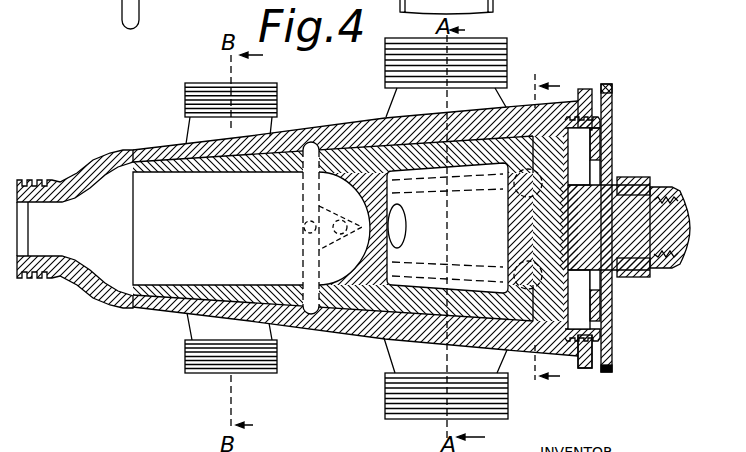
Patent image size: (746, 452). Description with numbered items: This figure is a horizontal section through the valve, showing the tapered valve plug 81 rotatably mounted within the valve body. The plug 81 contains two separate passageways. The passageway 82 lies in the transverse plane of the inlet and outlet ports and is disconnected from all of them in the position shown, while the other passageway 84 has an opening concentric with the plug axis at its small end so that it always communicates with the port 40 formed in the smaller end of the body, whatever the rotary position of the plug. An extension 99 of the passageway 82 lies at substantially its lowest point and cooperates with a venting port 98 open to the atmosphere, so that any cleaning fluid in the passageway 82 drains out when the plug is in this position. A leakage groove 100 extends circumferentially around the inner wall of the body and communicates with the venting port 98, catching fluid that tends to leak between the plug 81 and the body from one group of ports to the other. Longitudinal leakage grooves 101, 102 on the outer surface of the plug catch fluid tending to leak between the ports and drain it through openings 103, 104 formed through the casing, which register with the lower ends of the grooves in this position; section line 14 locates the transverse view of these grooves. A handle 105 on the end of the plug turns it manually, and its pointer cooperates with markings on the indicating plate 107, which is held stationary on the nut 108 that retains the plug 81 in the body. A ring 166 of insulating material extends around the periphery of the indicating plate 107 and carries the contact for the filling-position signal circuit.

The section line 14- 14 is at (542, 230).
The port 40 is at (75, 229).
The valve plug 81 is at (353, 322).
The passageway 82 is at (447, 228).
The passageway 84 is at (251, 228).
The venting port 98 is at (303, 233).
The extension 99 is at (411, 224).
The leakage groove 100 is at (303, 183).
The leakage groove 101 is at (492, 187).
The leakage groove 102 is at (463, 263).
The opening 103 is at (565, 170).
The opening 104 is at (573, 286).
The handle 105 is at (84, 3).
The indicating plate 107 is at (613, 112).
The nut 108 is at (600, 325).
The ring of insulating material 166 is at (608, 86).